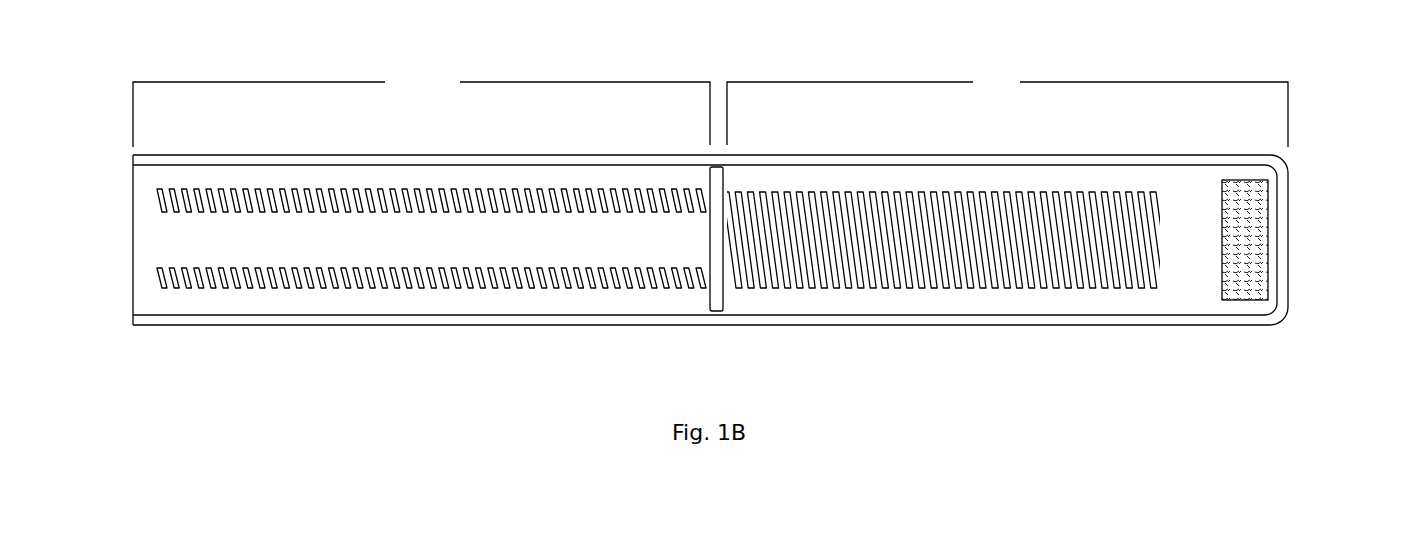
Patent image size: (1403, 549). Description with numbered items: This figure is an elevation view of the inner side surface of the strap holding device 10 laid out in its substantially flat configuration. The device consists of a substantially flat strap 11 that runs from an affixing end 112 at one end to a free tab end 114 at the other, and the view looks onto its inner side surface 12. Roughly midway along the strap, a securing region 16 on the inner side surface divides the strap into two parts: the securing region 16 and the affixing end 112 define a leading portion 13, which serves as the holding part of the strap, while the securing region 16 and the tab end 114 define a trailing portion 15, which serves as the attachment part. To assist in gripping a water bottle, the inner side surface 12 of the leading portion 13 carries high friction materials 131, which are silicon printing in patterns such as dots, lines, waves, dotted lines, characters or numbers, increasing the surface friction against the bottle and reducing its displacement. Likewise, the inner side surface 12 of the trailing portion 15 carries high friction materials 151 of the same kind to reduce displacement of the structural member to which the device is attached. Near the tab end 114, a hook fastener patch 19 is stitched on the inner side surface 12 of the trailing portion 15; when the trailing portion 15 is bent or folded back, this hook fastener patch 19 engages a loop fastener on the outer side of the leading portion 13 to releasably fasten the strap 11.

The strap holding device 10 is at (1308, 66).
The strap 11 is at (1132, 327).
The affixing end 112 is at (133, 208).
The free tab end 114 is at (1281, 271).
The inner side surface 12 is at (315, 235).
The leading portion 13 is at (421, 110).
The high friction materials 131 is at (460, 200).
The trailing portion 15 is at (1007, 110).
The high friction materials 151 is at (915, 198).
The securing region 16 is at (718, 302).
The hook fastener patch 19 is at (1240, 275).